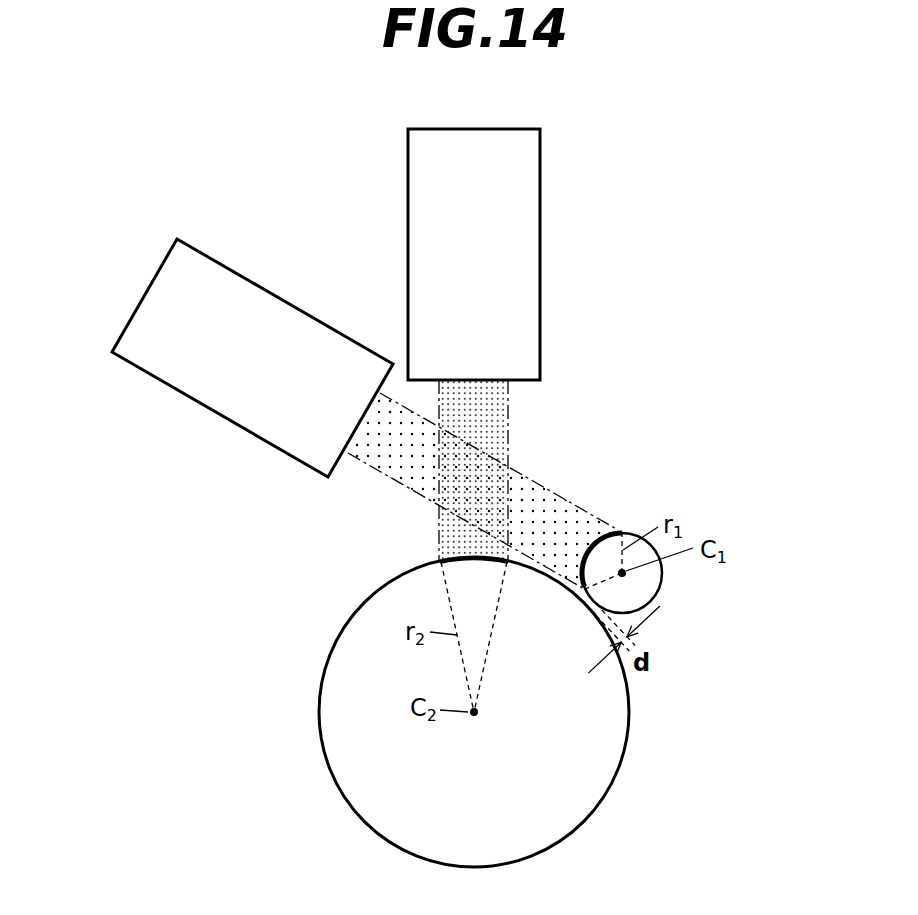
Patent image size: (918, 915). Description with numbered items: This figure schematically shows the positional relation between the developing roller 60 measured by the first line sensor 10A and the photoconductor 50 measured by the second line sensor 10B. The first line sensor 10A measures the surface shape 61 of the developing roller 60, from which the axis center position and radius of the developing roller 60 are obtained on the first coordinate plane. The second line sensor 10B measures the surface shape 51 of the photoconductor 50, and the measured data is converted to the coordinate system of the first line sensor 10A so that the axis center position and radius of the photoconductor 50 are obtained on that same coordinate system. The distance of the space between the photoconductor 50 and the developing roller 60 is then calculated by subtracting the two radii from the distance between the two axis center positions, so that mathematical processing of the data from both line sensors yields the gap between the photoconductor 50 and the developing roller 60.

The first line sensor 10A is at (267, 290).
The second line sensor 10B is at (541, 233).
The photoconductor 50 is at (320, 687).
The surface shape of the photoconductor 51 is at (430, 551).
The developing roller 60 is at (662, 583).
The surface shape of the developing roller 61 is at (612, 524).